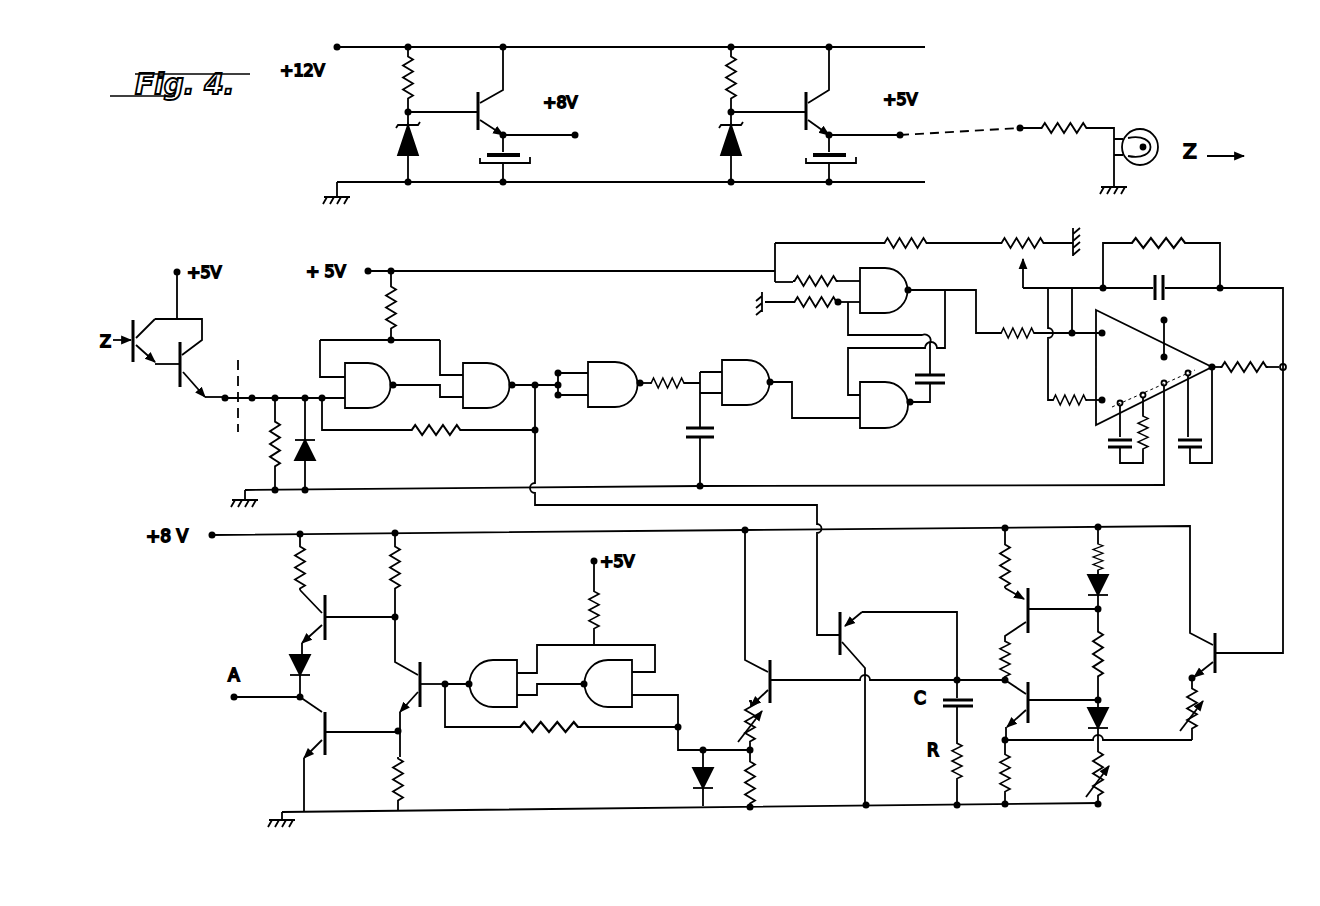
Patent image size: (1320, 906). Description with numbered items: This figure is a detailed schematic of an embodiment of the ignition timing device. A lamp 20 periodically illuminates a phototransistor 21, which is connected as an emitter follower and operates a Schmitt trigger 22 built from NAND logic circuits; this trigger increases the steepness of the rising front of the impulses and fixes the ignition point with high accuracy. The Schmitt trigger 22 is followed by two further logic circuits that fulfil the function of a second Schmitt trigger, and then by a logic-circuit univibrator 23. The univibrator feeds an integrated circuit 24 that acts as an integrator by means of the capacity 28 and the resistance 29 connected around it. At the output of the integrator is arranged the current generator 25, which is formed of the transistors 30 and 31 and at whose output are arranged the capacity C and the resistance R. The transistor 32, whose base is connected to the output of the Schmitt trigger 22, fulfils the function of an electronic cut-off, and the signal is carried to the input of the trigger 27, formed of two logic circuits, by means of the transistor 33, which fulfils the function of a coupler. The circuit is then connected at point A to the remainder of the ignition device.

The lamp 20 is at (1138, 128).
The phototransistor Darlington input stage 21 is at (141, 322).
The NAND gate pulse shaping network 22 is at (429, 379).
The NAND gate one-shot / flip-flop 23 is at (918, 348).
The operational amplifier 24 is at (1154, 367).
The output transistor 25 is at (1224, 663).
The NAND gate latch 27 is at (561, 688).
The feedback capacitor 28 is at (1171, 297).
The feedback potentiometer resistor 29 is at (1172, 252).
The transistor 30 is at (1022, 609).
The transistor 31 is at (1016, 713).
The transistor 32 is at (856, 636).
The transistor 33 is at (763, 680).